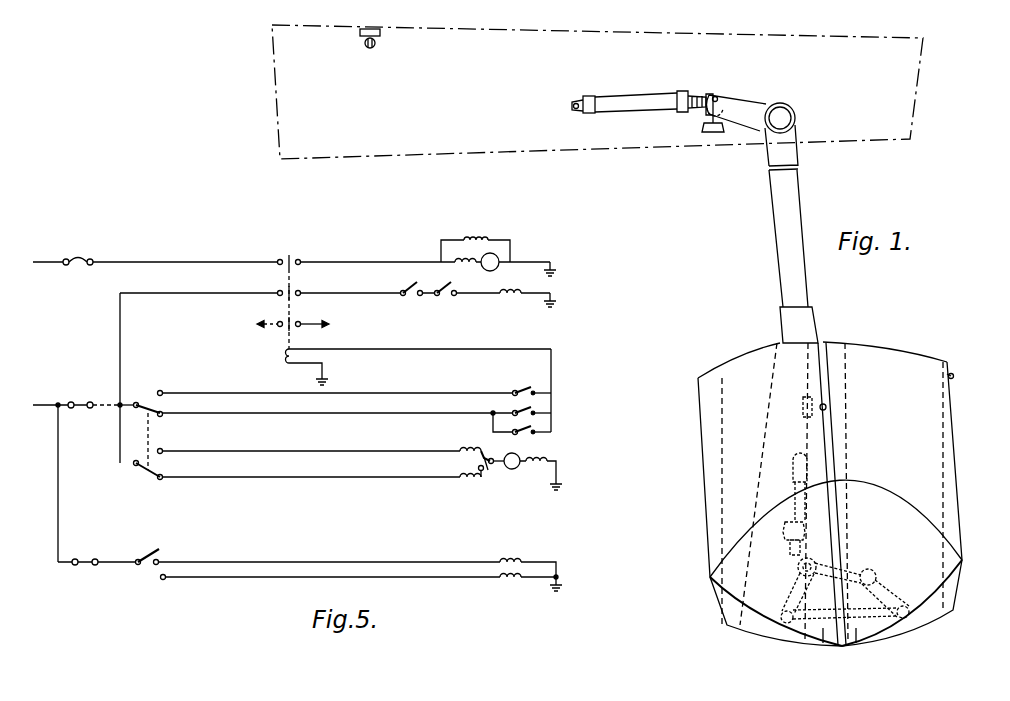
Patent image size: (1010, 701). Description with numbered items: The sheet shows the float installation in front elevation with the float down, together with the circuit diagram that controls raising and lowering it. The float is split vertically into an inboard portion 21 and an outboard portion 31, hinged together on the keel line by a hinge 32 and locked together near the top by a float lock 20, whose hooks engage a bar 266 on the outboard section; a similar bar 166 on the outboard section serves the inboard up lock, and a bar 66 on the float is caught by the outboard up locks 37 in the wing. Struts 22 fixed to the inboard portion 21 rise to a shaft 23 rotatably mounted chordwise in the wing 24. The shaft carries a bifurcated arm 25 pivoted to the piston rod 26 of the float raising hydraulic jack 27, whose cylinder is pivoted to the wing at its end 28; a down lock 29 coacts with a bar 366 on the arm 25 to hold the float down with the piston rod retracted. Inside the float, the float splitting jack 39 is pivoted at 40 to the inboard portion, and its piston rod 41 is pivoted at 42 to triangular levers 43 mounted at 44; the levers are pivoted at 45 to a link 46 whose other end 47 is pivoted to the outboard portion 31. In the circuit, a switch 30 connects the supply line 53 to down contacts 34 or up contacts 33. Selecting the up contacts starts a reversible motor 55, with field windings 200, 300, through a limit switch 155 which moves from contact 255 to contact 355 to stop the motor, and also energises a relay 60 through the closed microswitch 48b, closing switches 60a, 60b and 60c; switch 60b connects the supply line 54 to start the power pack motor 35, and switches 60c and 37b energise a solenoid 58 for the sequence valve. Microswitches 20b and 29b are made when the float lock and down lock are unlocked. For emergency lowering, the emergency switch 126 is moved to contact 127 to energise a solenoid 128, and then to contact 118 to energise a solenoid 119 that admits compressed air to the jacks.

In FIG. 1, the float lock 20 is at (808, 406).
In FIG. 1, the inboard portion of the float 21 is at (698, 465).
In FIG. 1, the struts 22 is at (772, 229).
In FIG. 1, the shaft 23 is at (781, 118).
In FIG. 1, the wing 24 is at (449, 152).
In FIG. 1, the bifurcated arm 25 is at (752, 99).
In FIG. 1, the piston rod 26 is at (714, 95).
In FIG. 1, the float raising hydraulic jack 27 is at (618, 96).
In FIG. 1, the end of the cylinder 28 is at (575, 109).
In FIG. 1, the down lock 29 is at (703, 128).
In FIG. 5, the switch 30 is at (141, 413).
In FIG. 1, the outboard portion of the float 31 is at (905, 351).
In FIG. 1, the hinge 32 is at (842, 646).
In FIG. 5, the up contacts 33 is at (165, 393).
In FIG. 5, the down contacts 34 is at (167, 414).
In FIG. 5, the electric motor 35 is at (489, 270).
In FIG. 1, the outboard up locks 37 is at (376, 45).
In FIG. 5, the microswitch 37b is at (418, 298).
In FIG. 1, the float splitting jack 39 is at (790, 507).
In FIG. 1, the pivot 40 is at (800, 455).
In FIG. 1, the piston rod 41 is at (790, 546).
In FIG. 1, the pivot 42 is at (783, 621).
In FIG. 1, the triangular levers 43 is at (810, 620).
In FIG. 1, the pivot 44 is at (797, 567).
In FIG. 1, the pivot 45 is at (904, 619).
In FIG. 1, the link 46 is at (880, 590).
In FIG. 1, the end of link 47 is at (869, 569).
In FIG. 5, the microswitch 48b is at (518, 382).
In FIG. 5, the microswitch 20b is at (540, 411).
In FIG. 5, the microswitch 29b is at (540, 432).
In FIG. 5, the supply line 53 is at (43, 404).
In FIG. 5, the supply line 54 is at (45, 263).
In FIG. 5, the reversible motor 55 is at (517, 467).
In FIG. 5, the solenoid 58 is at (512, 298).
In FIG. 5, the relay 60 is at (284, 352).
In FIG. 5, the switch 60a is at (300, 322).
In FIG. 5, the switch 60b is at (292, 258).
In FIG. 5, the switch 60c is at (295, 291).
In FIG. 1, the bar 66 is at (722, 521).
In FIG. 5, the contact 118 is at (163, 580).
In FIG. 5, the solenoid 119 is at (510, 582).
In FIG. 5, the emergency switch 126 is at (148, 556).
In FIG. 5, the contact 127 is at (160, 560).
In FIG. 5, the solenoid 128 is at (513, 556).
In FIG. 5, the limit switch 155 is at (489, 469).
In FIG. 1, the bar 166 is at (953, 374).
In FIG. 5, the field winding 200 is at (468, 446).
In FIG. 5, the contact 255 is at (487, 458).
In FIG. 1, the bar 266 is at (826, 405).
In FIG. 5, the field winding 300 is at (468, 480).
In FIG. 5, the contact 355 is at (476, 467).
In FIG. 1, the bar 366 is at (710, 113).